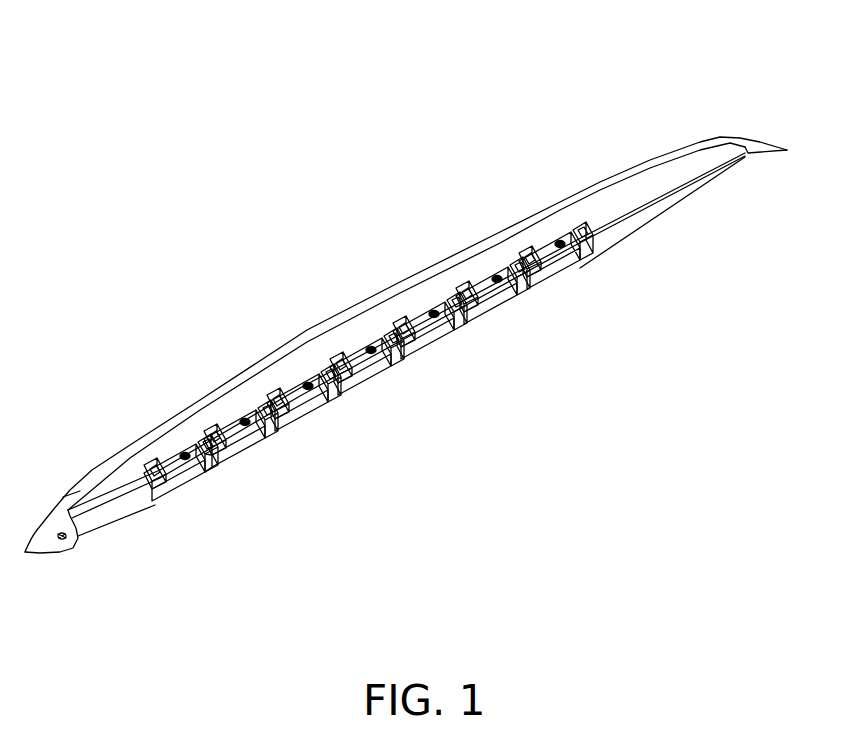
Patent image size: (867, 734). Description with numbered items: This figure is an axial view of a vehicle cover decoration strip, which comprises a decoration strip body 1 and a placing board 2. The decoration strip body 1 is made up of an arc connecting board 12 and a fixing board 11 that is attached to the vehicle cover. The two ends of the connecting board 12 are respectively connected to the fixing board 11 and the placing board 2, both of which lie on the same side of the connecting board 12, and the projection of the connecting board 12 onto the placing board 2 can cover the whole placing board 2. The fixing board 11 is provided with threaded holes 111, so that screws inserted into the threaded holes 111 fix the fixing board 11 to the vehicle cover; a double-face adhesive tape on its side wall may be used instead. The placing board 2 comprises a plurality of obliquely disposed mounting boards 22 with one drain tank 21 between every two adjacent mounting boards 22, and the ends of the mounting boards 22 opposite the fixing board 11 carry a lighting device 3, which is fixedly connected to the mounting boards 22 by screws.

The decoration strip body 1 is at (406, 315).
The fixing board 11 is at (406, 315).
The threaded hole 111 is at (75, 547).
The connecting board 12 is at (612, 200).
The placing board 2 is at (368, 361).
The drain tank 21 is at (290, 430).
The mounting board 22 is at (280, 438).
The lighting device 3 is at (250, 452).